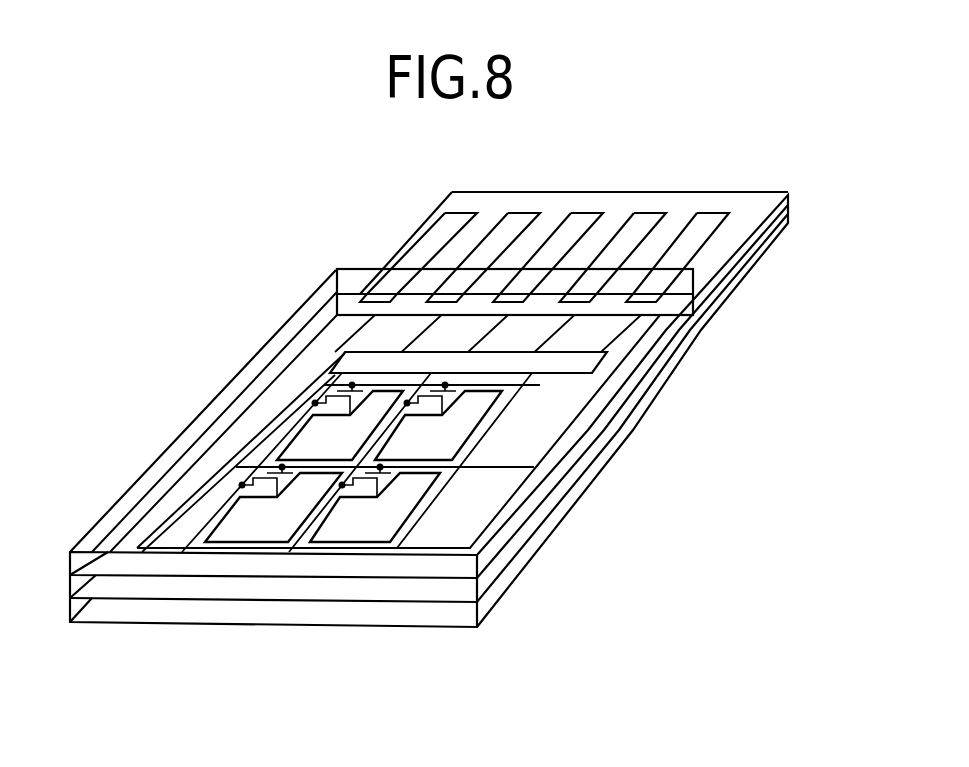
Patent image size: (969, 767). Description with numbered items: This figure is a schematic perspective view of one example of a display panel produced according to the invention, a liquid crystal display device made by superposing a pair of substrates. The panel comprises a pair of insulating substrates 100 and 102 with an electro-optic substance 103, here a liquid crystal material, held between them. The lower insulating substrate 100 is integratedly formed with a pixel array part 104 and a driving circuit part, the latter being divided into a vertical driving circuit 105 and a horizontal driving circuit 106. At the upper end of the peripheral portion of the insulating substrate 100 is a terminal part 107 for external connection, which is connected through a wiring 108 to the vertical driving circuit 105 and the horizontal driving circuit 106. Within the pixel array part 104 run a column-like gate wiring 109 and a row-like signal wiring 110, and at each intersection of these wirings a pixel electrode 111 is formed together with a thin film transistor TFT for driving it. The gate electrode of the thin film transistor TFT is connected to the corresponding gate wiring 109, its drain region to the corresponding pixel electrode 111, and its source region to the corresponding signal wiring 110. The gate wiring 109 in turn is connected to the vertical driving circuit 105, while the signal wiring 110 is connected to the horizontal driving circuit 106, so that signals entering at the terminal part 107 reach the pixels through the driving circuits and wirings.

The insulating substrate 100 is at (503, 592).
The insulating substrate 102 is at (690, 288).
The electro-optic substance 103 is at (572, 470).
The pixel array part 104 is at (487, 525).
The vertical driving circuit 105 is at (293, 395).
The horizontal driving circuit 106 is at (596, 365).
The terminal part 107 is at (585, 222).
The wiring 108 is at (413, 332).
The gate wiring 109 is at (453, 547).
The signal wiring 110 is at (393, 556).
The pixel electrode 111 is at (267, 525).
The thin film transistor TFT is at (268, 490).